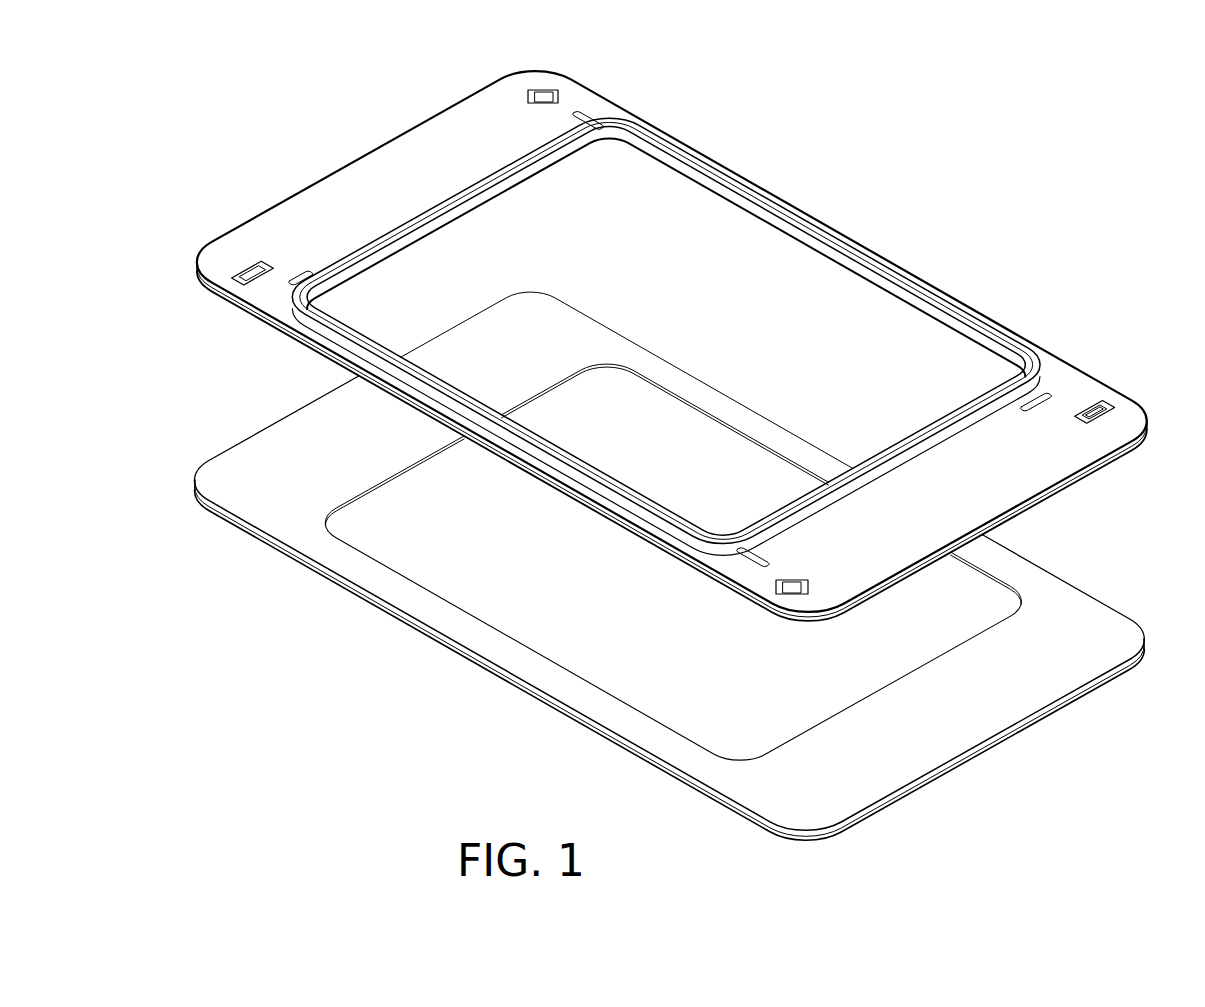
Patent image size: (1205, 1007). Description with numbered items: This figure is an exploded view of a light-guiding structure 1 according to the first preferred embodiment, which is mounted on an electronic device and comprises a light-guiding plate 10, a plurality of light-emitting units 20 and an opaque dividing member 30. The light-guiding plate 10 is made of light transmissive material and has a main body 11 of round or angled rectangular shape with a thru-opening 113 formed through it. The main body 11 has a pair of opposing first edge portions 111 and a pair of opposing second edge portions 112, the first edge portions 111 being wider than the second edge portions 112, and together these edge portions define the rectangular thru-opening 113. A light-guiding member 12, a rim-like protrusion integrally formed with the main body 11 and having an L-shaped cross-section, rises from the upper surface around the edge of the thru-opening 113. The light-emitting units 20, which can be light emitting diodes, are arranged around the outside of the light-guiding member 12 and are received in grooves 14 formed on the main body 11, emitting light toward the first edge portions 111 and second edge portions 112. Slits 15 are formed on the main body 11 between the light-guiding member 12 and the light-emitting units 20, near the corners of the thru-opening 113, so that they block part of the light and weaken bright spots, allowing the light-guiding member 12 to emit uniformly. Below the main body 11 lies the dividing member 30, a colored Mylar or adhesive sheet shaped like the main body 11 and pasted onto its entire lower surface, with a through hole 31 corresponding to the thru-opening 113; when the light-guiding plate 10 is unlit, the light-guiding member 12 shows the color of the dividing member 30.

The light-guiding structure 1 is at (902, 98).
The light-guiding plate 10 is at (966, 254).
The main body 11 is at (346, 203).
The first edge portion 111 is at (950, 516).
The second edge portion 112 is at (822, 222).
The thru-opening 113 is at (690, 297).
The light-guiding member 12 is at (918, 450).
The groove 14 is at (1106, 402).
The slit 15 is at (1040, 398).
The light-emitting unit 20 is at (1087, 404).
The dividing member 30 is at (1130, 614).
The through hole 31 is at (800, 735).